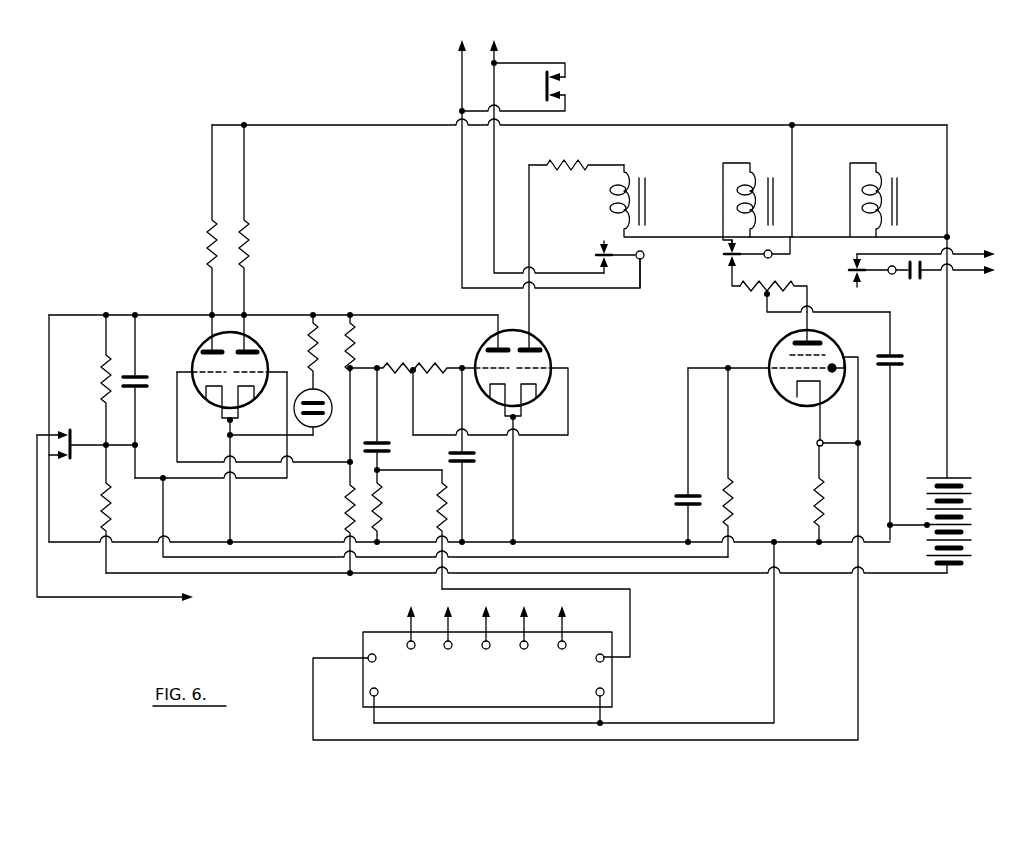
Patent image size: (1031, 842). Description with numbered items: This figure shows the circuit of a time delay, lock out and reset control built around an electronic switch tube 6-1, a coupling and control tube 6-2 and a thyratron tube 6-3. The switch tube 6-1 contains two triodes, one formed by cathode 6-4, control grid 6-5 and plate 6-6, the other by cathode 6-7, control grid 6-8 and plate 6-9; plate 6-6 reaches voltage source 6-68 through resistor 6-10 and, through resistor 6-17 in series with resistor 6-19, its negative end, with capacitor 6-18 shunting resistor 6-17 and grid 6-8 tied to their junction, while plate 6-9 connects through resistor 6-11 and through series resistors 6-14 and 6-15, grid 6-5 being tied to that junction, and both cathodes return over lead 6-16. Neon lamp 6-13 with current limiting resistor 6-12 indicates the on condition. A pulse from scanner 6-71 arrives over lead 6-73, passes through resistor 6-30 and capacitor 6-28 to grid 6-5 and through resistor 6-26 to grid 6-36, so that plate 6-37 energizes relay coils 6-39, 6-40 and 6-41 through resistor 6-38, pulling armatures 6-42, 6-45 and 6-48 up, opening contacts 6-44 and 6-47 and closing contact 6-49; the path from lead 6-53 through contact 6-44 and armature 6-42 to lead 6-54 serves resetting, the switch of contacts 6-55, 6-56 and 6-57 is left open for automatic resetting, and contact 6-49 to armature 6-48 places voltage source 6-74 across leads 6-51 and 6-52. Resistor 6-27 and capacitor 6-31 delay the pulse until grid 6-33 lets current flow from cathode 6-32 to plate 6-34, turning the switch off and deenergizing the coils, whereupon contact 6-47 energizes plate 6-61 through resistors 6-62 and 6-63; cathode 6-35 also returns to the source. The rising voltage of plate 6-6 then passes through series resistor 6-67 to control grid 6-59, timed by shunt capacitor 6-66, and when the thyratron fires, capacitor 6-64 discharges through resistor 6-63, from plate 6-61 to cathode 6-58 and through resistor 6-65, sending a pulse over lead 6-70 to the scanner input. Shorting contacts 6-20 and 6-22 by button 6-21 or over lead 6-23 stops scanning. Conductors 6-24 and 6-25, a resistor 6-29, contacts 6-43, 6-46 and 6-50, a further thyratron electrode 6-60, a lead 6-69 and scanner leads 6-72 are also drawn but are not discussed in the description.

The electronic switch tube 6-1 is at (232, 340).
The coupling and control tube 6-2 is at (513, 326).
The thyratron tube 6-3 is at (818, 336).
The cathode 6-4 is at (212, 398).
The control grid 6-5 is at (193, 366).
The plate 6-6 is at (200, 348).
The cathode 6-7 is at (246, 398).
The control grid 6-8 is at (266, 366).
The plate 6-9 is at (254, 348).
The resistor 6-10 is at (206, 262).
The resistor 6-11 is at (254, 262).
The current limiting resistor 6-12 is at (302, 326).
The neon lamp 6-13 is at (324, 428).
The resistor 6-14 is at (360, 324).
The resistor 6-15 is at (342, 484).
The lead 6-16 is at (288, 540).
The resistor 6-17 is at (100, 388).
The capacitor 6-18 is at (150, 392).
The resistor 6-19 is at (114, 518).
The contact 6-20 is at (50, 434).
The button 6-21 is at (80, 452).
The contact 6-22 is at (62, 466).
The lead 6-23 is at (116, 598).
The conductor 6-24 is at (242, 578).
The supply conductor 6-25 is at (322, 122).
The resistor 6-26 is at (378, 360).
The resistor 6-27 is at (422, 374).
The capacitor 6-28 is at (405, 438).
The resistor 6-29 is at (388, 510).
The resistor 6-30 is at (438, 506).
The capacitor 6-31 is at (478, 458).
The cathode 6-32 is at (494, 400).
The grid 6-33 is at (482, 362).
The plate 6-34 is at (490, 336).
The cathode 6-35 is at (532, 400).
The grid 6-36 is at (554, 362).
The plate 6-37 is at (542, 344).
The resistor 6-38 is at (557, 158).
The relay coil 6-39 is at (634, 176).
The relay coil 6-40 is at (760, 164).
The relay coil 6-41 is at (882, 174).
The armature 6-42 is at (642, 256).
The relay contact 6-43 is at (602, 252).
The contact 6-44 is at (598, 270).
The armature 6-45 is at (766, 258).
The relay contact 6-46 is at (726, 248).
The contact 6-47 is at (730, 272).
The armature 6-48 is at (886, 274).
The contact 6-49 is at (848, 262).
The relay contact 6-50 is at (836, 288).
The lead 6-51 is at (958, 250).
The lead 6-52 is at (960, 272).
The lead 6-53 is at (456, 82).
The lead 6-54 is at (496, 60).
The contact 6-55 is at (564, 80).
The contact 6-56 is at (565, 94).
The contact 6-57 is at (540, 94).
The cathode 6-58 is at (802, 398).
The control grid 6-59 is at (782, 386).
The screen grid 6-60 is at (836, 354).
The plate 6-61 is at (788, 345).
The resistor 6-62 is at (732, 296).
The resistor 6-63 is at (792, 310).
The capacitor 6-64 is at (906, 362).
The resistor 6-65 is at (810, 506).
The shunt capacitor 6-66 is at (672, 508).
The series resistor 6-67 is at (738, 504).
The voltage source 6-68 is at (926, 488).
The conductor 6-69 is at (772, 614).
The lead 6-70 is at (860, 650).
The scanner 6-71 is at (364, 644).
The scanner output leads 6-72 is at (400, 624).
The lead 6-73 is at (632, 620).
The voltage source 6-74 is at (920, 278).